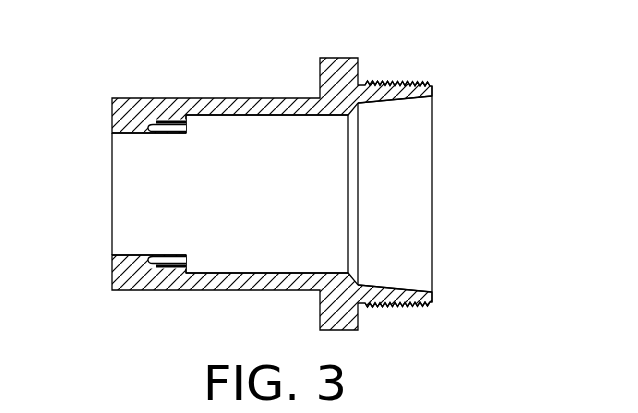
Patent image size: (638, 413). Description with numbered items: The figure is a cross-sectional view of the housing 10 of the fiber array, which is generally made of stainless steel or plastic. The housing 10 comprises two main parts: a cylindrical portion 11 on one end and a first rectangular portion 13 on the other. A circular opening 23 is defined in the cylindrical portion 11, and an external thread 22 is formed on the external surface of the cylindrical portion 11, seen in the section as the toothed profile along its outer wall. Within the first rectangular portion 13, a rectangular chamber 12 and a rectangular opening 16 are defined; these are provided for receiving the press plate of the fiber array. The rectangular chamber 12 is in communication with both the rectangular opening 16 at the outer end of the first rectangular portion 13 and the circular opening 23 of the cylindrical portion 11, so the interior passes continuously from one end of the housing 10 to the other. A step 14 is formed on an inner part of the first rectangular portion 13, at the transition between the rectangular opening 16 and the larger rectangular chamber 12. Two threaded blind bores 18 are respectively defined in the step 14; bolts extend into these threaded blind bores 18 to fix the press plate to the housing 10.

The housing 10 is at (267, 80).
The cylindrical portion 11 is at (402, 82).
The rectangular chamber 12 is at (288, 137).
The first rectangular portion 13 is at (172, 100).
The step 14 is at (186, 213).
The rectangular opening 16 is at (130, 207).
The threaded blind bores 18 is at (153, 123).
The external thread 22 is at (418, 306).
The circular opening 23 is at (402, 193).